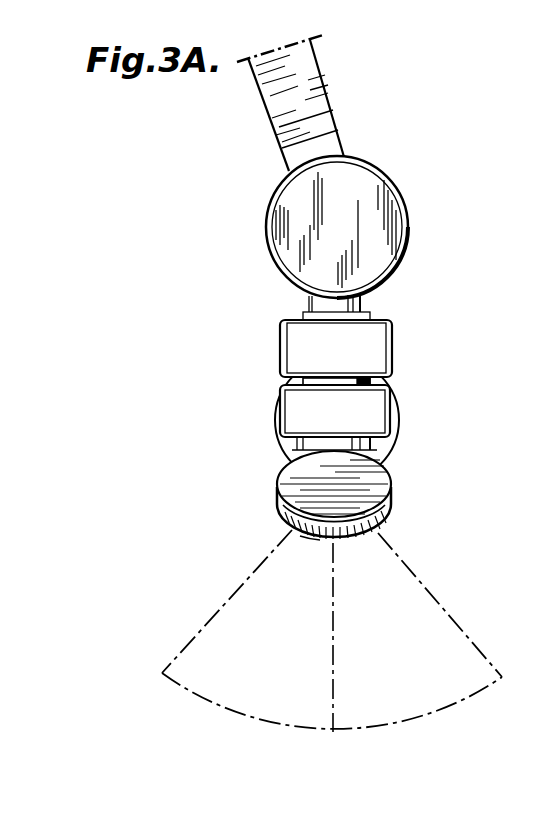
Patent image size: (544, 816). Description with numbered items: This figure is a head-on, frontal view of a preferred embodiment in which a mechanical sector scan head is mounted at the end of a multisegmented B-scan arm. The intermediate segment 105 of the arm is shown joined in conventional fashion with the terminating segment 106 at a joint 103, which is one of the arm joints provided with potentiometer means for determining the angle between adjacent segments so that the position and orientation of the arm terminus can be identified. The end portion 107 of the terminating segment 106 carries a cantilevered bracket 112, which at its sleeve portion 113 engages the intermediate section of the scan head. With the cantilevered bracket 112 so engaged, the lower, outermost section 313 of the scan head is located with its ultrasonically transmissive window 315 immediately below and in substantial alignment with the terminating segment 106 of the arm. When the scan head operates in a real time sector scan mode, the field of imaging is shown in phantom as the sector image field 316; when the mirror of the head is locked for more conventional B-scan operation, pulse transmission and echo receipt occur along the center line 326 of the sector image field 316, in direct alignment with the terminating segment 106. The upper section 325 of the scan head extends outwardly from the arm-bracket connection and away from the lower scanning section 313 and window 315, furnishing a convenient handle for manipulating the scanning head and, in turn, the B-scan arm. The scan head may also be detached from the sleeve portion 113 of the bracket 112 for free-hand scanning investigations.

The intermediate segment 105 is at (323, 98).
The joint 103 is at (397, 213).
The terminating segment 106 is at (360, 303).
The cantilevered bracket 112 is at (385, 352).
The end portion 107 is at (370, 390).
The sleeve portion 113 is at (375, 423).
The upper section 325 is at (392, 450).
The lower outermost section 313 is at (388, 498).
The ultrasonically transmissive window 315 is at (305, 532).
The sector image field 316 is at (452, 635).
The center line 326 is at (333, 653).